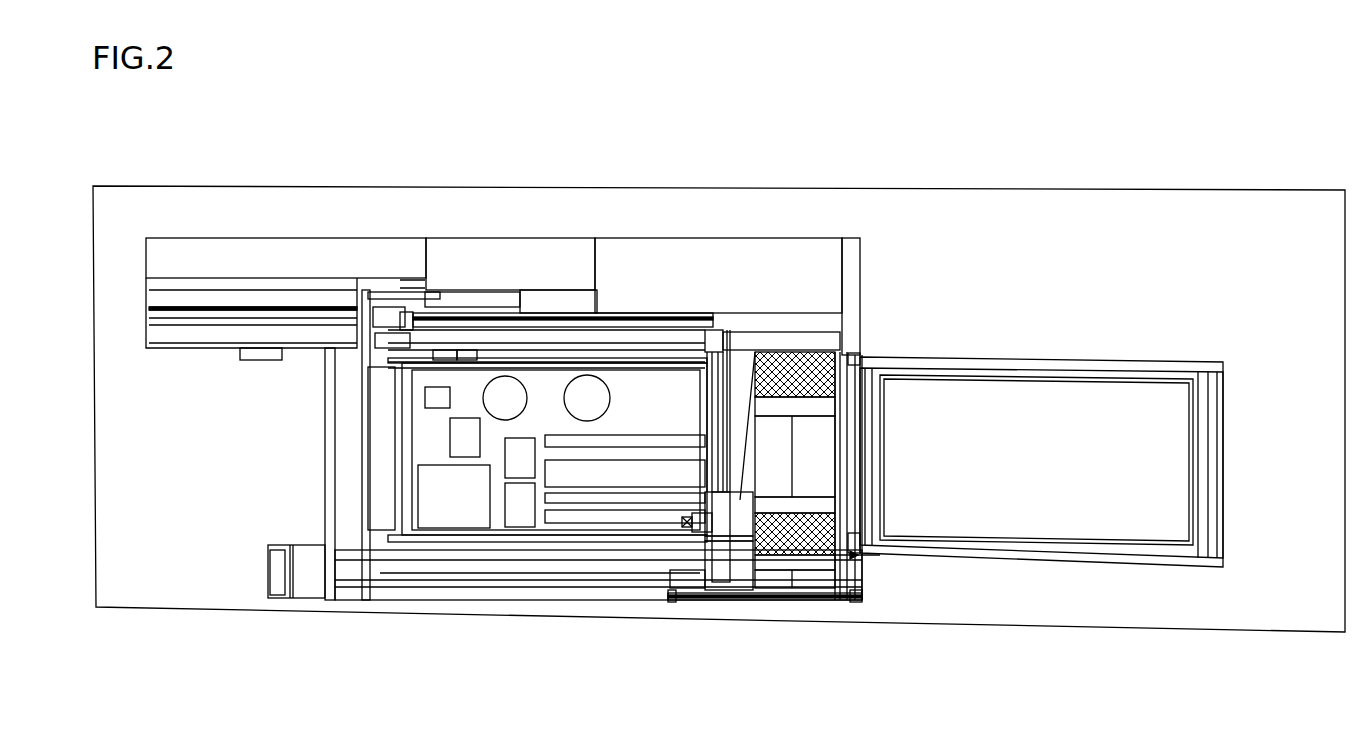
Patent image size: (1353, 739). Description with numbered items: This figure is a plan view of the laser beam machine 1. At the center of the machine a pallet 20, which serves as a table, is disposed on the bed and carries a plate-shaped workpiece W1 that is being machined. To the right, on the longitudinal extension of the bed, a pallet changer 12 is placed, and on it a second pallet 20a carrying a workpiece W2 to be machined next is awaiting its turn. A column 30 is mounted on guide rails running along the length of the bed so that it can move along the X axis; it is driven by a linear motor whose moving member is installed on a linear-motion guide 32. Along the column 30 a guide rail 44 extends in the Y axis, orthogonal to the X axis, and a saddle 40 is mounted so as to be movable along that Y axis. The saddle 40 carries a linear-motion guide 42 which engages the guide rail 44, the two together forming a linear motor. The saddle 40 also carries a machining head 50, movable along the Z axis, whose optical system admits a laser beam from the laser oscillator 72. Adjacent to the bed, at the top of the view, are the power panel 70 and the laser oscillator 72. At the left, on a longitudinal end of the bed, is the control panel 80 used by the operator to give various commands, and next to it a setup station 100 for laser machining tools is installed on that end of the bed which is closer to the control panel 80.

The laser beam machine 1 is at (884, 172).
The pallet changer 12 is at (1026, 553).
The pallet 20 is at (547, 402).
The pallet 20a is at (1142, 538).
The column 30 is at (722, 588).
The linear-motion guide 32 is at (686, 580).
The saddle 40 is at (762, 556).
The linear-motion guide 42 is at (738, 548).
The guide rail 44 is at (713, 345).
The machining head 50 is at (678, 524).
The power panel 70 is at (345, 255).
The laser oscillator 72 is at (758, 252).
The control panel 80 is at (300, 597).
The setup station 100 is at (378, 430).
The workpiece W1 is at (556, 336).
The workpiece W2 is at (1031, 400).